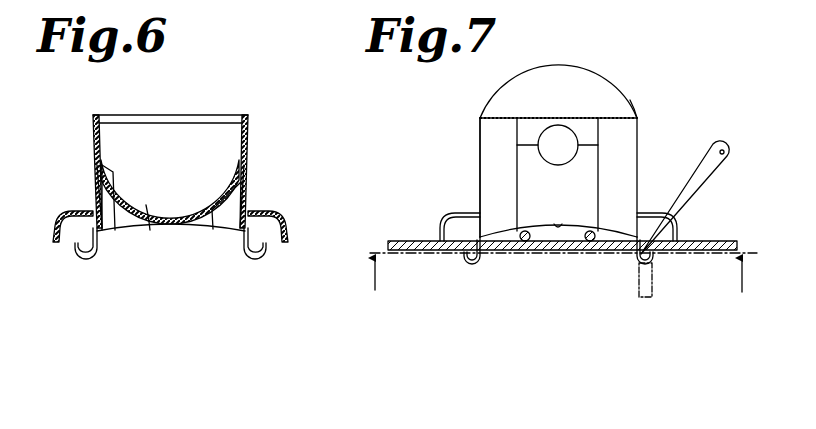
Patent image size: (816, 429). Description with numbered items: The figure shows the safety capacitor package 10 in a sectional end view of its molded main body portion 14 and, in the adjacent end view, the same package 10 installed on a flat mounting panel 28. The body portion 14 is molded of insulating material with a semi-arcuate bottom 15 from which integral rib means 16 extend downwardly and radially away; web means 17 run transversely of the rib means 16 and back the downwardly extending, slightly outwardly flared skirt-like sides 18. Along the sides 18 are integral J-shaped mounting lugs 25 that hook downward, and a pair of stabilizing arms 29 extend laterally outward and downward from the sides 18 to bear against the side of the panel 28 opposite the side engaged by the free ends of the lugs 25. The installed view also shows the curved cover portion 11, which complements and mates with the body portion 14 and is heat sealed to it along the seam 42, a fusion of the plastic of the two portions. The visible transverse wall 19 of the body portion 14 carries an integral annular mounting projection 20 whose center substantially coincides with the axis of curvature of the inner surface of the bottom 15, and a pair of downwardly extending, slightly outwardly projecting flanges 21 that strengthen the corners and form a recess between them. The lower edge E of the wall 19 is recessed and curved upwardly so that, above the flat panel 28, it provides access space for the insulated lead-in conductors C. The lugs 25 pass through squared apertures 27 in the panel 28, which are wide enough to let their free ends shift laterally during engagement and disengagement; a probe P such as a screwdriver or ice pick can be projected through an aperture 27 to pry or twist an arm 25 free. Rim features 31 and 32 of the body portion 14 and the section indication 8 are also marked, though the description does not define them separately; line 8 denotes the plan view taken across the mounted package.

In FIG. 7, the safety capacitor package 10 is at (487, 100).
In FIG. 7, the curved cover portion 11 is at (601, 86).
In FIG. 6, the main body portion 14 is at (95, 130).
In FIG. 7, the main body portion 14 is at (480, 136).
In FIG. 6, the semi-arcuate bottom 15 is at (117, 200).
In FIG. 6, the rib means 16 is at (146, 222).
In FIG. 6, the web means 17 is at (103, 232).
In FIG. 6, the sides 18 is at (93, 196).
In FIG. 7, the transverse walls 19 is at (528, 158).
In FIG. 7, the annular mounting projections 20 is at (557, 133).
In FIG. 7, the flanges 21 is at (492, 170).
In FIG. 6, the J-shaped mounting lugs 25 is at (80, 255).
In FIG. 7, the J-shaped mounting lugs 25 is at (466, 262).
In FIG. 7, the apertures 27 is at (485, 250).
In FIG. 7, the flat mounting panel 28 is at (408, 245).
In FIG. 6, the stabilizing arms 29 is at (56, 215).
In FIG. 7, the stabilizing arms 29 is at (457, 216).
In FIG. 6, the inner lip 31 is at (185, 130).
In FIG. 6, the top rim 32 is at (148, 114).
In FIG. 7, the seam 42 is at (621, 116).
In FIG. 7, the section line 8 is at (559, 286).
In FIG. 7, the insulated conductors C is at (590, 243).
In FIG. 6, the lower recessed edge E is at (174, 226).
In FIG. 7, the lower recessed edge E is at (560, 224).
In FIG. 7, the probe P is at (708, 150).